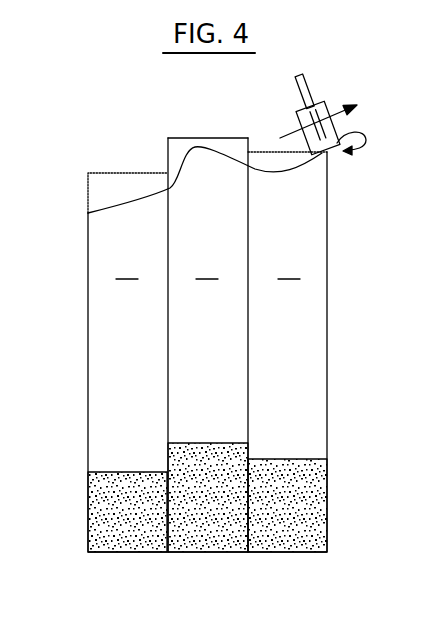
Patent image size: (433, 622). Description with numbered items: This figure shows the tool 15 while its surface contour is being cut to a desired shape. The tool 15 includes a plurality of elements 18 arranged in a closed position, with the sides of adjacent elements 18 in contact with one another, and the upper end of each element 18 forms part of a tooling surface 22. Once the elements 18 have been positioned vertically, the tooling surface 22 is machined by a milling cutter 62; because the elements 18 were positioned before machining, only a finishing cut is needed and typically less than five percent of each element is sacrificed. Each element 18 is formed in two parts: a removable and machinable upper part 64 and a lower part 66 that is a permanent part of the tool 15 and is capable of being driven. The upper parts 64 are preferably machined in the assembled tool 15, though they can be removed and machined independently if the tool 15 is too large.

The tool 15 is at (345, 379).
The elements 18 is at (207, 345).
The tooling surface 22 is at (150, 195).
The milling cutter 62 is at (321, 94).
The upper part 64 is at (103, 223).
The lower part 66 is at (128, 537).